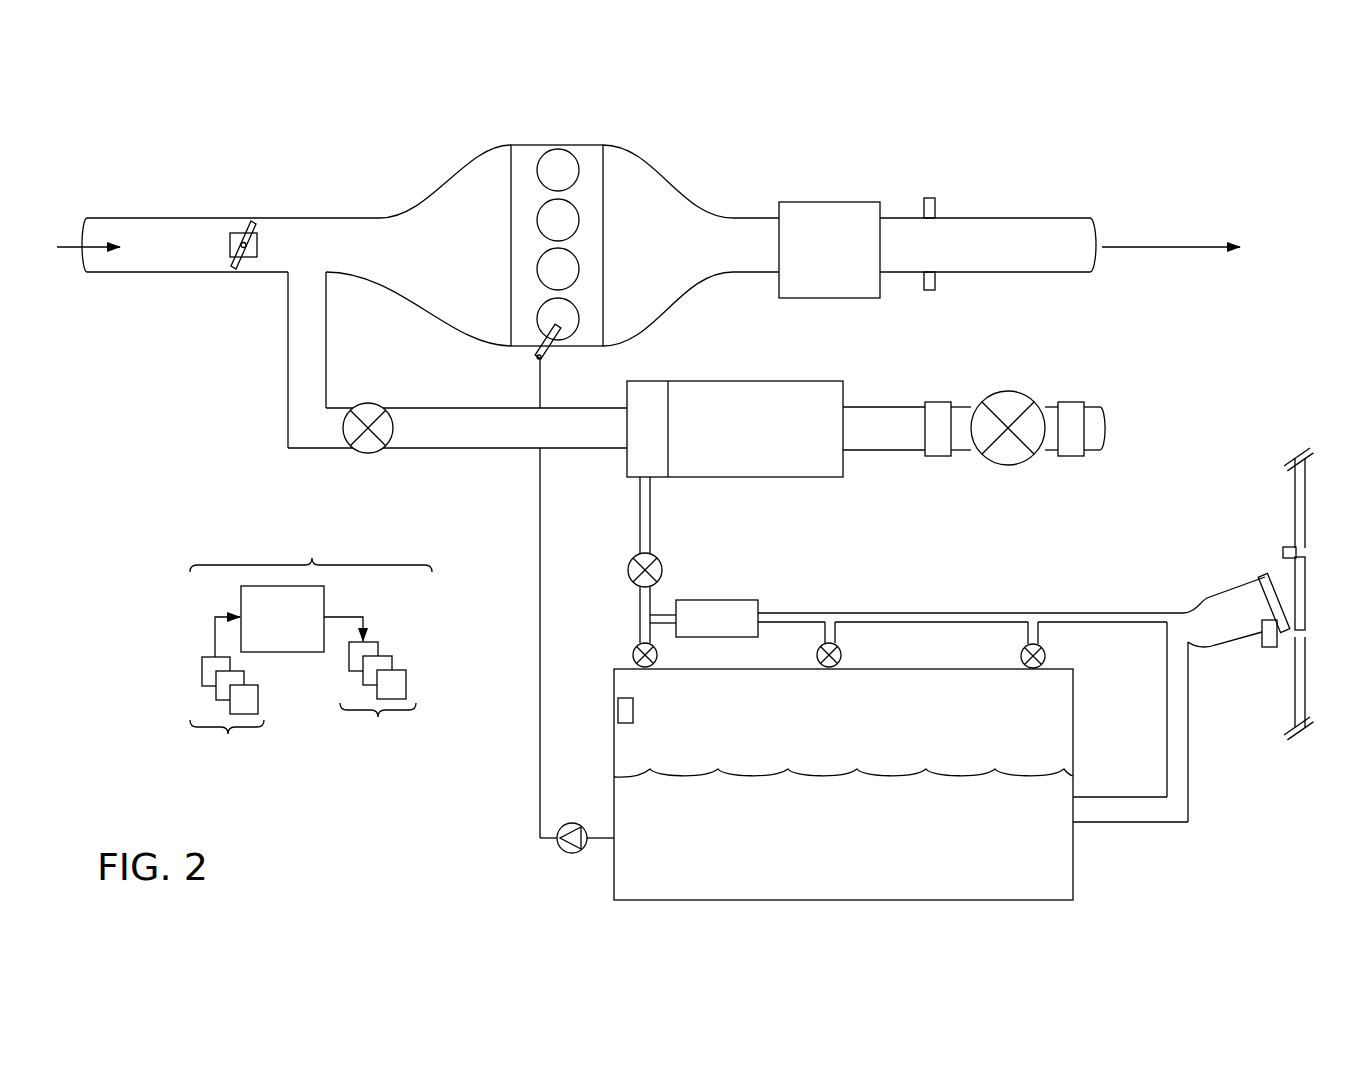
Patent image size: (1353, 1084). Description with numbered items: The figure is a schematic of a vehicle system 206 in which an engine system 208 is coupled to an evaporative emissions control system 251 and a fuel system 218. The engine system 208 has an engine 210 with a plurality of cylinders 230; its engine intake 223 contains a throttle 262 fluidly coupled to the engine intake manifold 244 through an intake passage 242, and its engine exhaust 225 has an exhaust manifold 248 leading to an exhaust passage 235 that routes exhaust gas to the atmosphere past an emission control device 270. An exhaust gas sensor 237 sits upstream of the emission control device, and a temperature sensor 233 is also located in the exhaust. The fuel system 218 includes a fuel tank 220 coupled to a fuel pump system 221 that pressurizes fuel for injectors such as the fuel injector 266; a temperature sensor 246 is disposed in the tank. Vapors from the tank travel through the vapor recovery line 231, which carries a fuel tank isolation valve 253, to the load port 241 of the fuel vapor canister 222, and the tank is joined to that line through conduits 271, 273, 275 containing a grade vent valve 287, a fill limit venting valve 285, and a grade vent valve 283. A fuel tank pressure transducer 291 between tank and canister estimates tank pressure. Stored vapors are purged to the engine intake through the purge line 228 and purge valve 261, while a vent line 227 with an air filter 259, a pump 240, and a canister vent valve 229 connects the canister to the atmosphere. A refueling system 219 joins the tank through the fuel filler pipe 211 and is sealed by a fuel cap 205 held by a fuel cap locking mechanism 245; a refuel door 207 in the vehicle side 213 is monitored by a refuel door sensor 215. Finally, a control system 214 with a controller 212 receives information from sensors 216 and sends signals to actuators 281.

The vehicle system 206 is at (128, 150).
The engine system 208 is at (893, 145).
The engine 210 is at (603, 228).
The intake passage 242 is at (277, 273).
The engine intake manifold 244 is at (473, 256).
The exhaust manifold 248 is at (687, 256).
The throttle 262 is at (257, 251).
The engine intake 223 is at (435, 170).
The cylinders 230 is at (572, 174).
The engine exhaust 225 is at (768, 155).
The emission control device 270 is at (816, 202).
The exhaust gas sensor 237 is at (924, 206).
The temperature sensor 233 is at (924, 283).
The exhaust passage 235 is at (1040, 218).
The fuel injector 266 is at (546, 350).
The purge line 228 is at (482, 441).
The purge valve 261 is at (364, 403).
The load port 241 is at (647, 381).
The fuel vapor canister 222 is at (843, 400).
The vent line 227 is at (886, 437).
The pump 240 is at (938, 402).
The canister vent valve 229 is at (1010, 391).
The air filter 259 is at (1075, 402).
The emissions control system 251 is at (1107, 355).
The vapor recovery line 231 is at (650, 500).
The fuel tank isolation valve 253 is at (662, 570).
The fuel tank pressure transducer 291 is at (716, 600).
The grade vent valve 287 is at (633, 655).
The conduit 271 is at (650, 630).
The actuators 281 is at (1092, 613).
The conduit 273 is at (820, 633).
The fill limit venting valve 285 is at (841, 655).
The conduit 275 is at (1025, 632).
The grade vent valve 283 is at (1045, 660).
The fuel tank 220 is at (1073, 770).
The temperature sensor 246 is at (618, 712).
The fuel pump system 221 is at (575, 823).
The fuel filler pipe 211 is at (1190, 717).
The fuel cap locking mechanism 245 is at (1270, 647).
The fuel cap 205 is at (1268, 573).
The refueling system 219 is at (1238, 572).
The refuel door sensor 215 is at (1289, 547).
The side of the vehicle 213 is at (1307, 510).
The refuel door 207 is at (1307, 595).
The fuel system 218 is at (1120, 855).
The control system 214 is at (311, 544).
The controller 212 is at (289, 621).
The sensors 216 is at (227, 714).